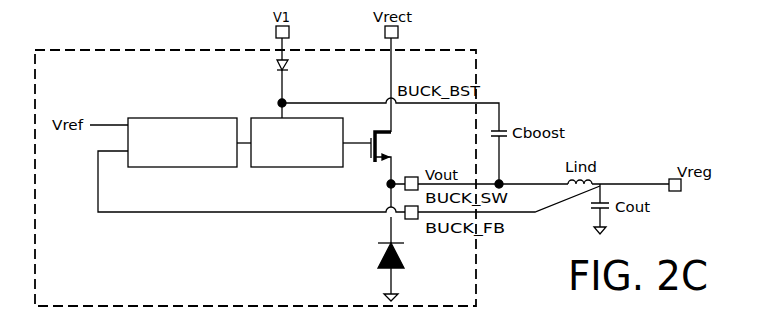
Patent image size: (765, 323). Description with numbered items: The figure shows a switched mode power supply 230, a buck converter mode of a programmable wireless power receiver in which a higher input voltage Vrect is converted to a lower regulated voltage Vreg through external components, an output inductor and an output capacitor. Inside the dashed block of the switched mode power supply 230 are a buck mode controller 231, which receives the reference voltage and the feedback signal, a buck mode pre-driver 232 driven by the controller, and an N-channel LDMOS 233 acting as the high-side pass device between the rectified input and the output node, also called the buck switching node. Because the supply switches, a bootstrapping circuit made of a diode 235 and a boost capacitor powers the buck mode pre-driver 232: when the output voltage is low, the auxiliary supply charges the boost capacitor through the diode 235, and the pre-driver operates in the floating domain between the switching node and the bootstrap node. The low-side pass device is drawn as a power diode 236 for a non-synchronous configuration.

The switched mode power supply 230 is at (186, 280).
The buck mode controller 231 is at (134, 117).
The buck mode pre-driver 232 is at (257, 117).
The N-channel LDMOS 233 is at (395, 151).
The diode 235 is at (288, 72).
The power diode 236 is at (396, 270).